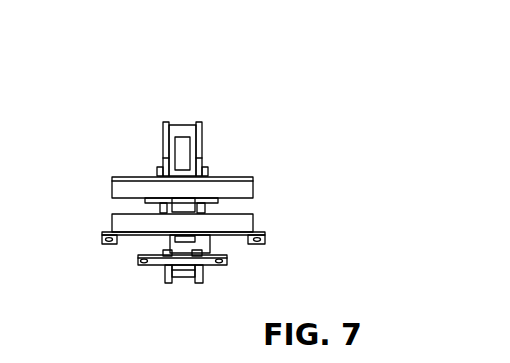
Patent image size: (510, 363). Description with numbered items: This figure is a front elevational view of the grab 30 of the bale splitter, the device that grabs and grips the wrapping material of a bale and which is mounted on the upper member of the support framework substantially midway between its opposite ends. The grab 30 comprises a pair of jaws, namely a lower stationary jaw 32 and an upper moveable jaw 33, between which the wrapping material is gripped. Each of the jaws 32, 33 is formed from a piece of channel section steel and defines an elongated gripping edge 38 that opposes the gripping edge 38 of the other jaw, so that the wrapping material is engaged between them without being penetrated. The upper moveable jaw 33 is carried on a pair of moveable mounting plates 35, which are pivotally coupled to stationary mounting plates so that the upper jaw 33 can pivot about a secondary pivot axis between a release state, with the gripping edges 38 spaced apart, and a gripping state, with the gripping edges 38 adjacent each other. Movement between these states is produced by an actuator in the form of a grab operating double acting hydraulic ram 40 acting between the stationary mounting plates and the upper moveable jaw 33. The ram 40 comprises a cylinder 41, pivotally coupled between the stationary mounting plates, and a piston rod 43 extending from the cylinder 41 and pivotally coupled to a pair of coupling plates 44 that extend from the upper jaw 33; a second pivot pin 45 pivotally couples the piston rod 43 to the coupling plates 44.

The grab 30 is at (288, 135).
The lower stationary jaw 32 is at (254, 221).
The upper moveable jaw 33 is at (253, 180).
The moveable mounting plates 35 is at (156, 171).
The gripping edge 38 is at (113, 202).
The grab operating double acting hydraulic ram 40 is at (167, 210).
The cylinder 41 is at (187, 207).
The piston rod 43 is at (203, 168).
The coupling plates 44 is at (163, 138).
The second pivot pin 45 is at (183, 152).